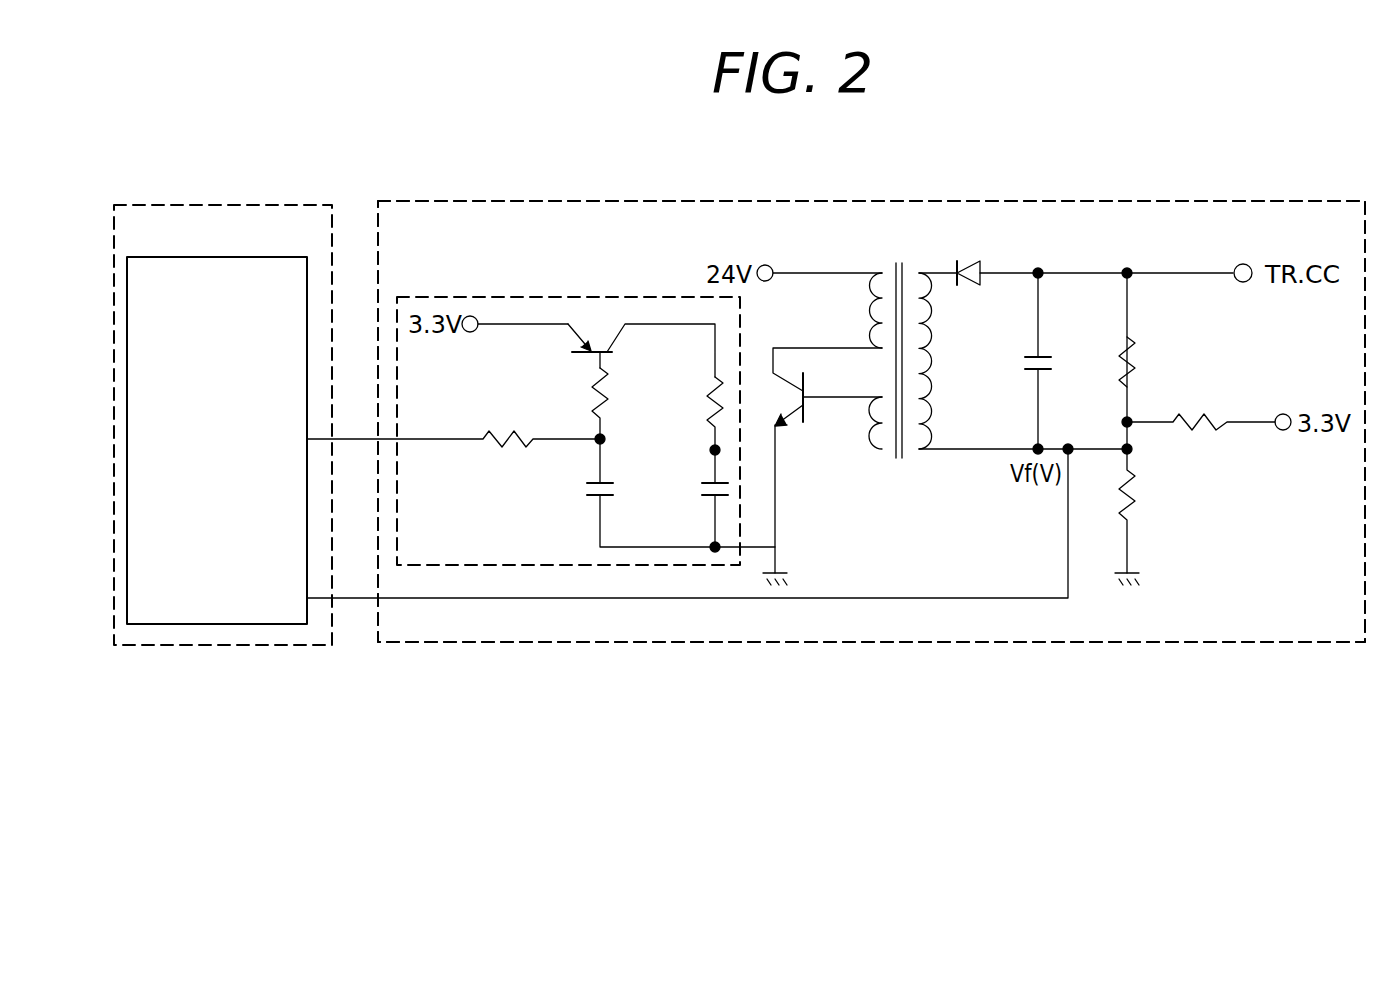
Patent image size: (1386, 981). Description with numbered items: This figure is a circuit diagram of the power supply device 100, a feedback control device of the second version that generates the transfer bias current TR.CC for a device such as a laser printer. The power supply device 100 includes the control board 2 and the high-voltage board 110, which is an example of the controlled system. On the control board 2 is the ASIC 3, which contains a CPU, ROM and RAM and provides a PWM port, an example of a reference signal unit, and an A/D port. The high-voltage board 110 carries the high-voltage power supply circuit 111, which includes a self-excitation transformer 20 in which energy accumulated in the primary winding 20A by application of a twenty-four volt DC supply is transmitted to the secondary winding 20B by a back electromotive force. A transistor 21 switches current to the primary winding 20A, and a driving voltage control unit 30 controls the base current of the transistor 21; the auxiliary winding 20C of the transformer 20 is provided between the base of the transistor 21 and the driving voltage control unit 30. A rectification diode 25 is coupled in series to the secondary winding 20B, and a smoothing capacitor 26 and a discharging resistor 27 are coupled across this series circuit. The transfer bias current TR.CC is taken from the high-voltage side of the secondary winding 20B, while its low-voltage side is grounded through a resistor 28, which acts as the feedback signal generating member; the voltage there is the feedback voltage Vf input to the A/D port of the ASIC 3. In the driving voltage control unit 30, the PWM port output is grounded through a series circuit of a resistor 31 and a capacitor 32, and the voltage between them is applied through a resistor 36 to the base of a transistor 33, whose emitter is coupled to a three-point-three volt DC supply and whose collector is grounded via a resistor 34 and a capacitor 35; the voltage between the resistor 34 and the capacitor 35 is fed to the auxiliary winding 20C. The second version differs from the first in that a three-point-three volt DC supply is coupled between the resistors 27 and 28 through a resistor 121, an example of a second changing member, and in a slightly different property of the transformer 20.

The control board 2 is at (258, 205).
The ASIC 3 is at (232, 257).
The self-excitation transformer 20 is at (901, 372).
The primary winding 20A is at (870, 316).
The secondary winding 20B is at (928, 352).
The auxiliary winding 20C is at (888, 457).
The transistor 21 is at (806, 428).
The rectification diode 25 is at (975, 264).
The smoothing capacitor 26 is at (1044, 356).
The discharging resistor 27 is at (1134, 340).
The resistor 28 is at (1133, 472).
The driving voltage control unit 30 is at (556, 297).
The resistor 31 is at (491, 449).
The capacitor 32 is at (605, 482).
The transistor 33 is at (582, 360).
The resistor 34 is at (708, 378).
The capacitor 35 is at (708, 496).
The resistor 36 is at (612, 366).
The power supply device 100 is at (1087, 156).
The high-voltage board 110 is at (1128, 201).
The high-voltage power supply circuit 111 is at (1196, 349).
The resistor 121 is at (1226, 418).